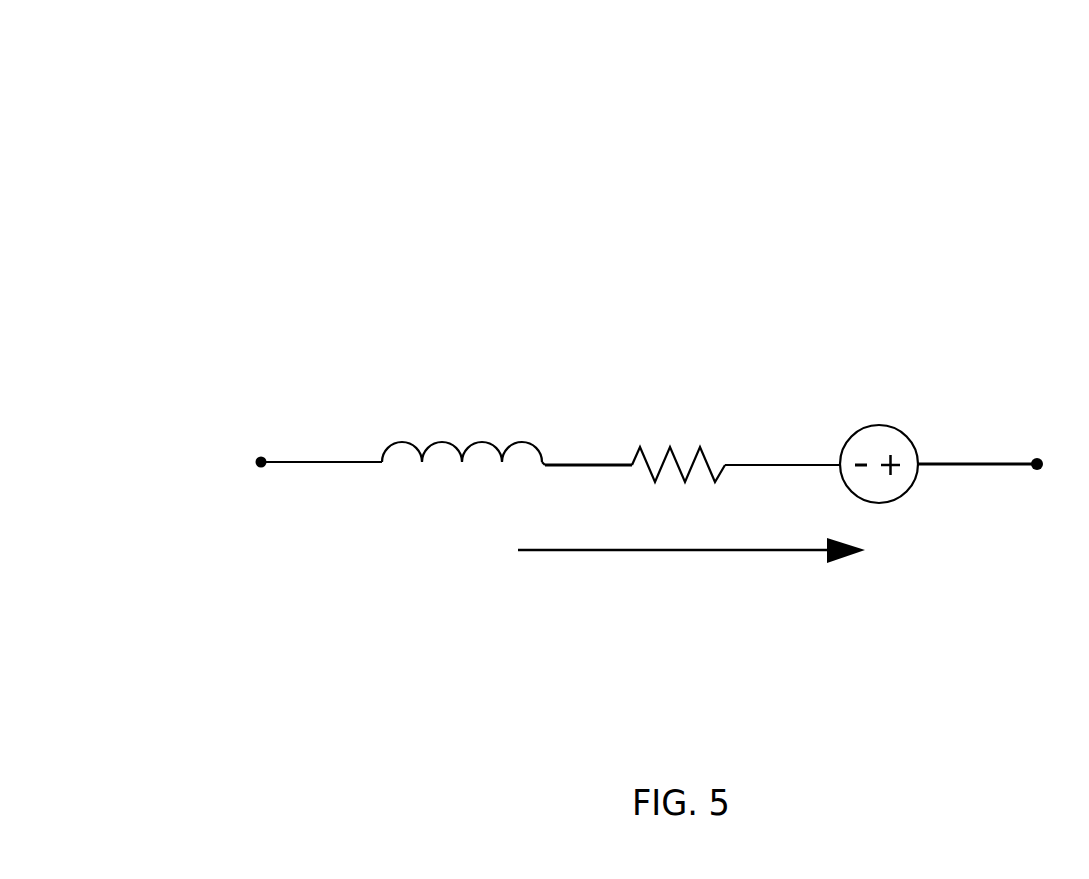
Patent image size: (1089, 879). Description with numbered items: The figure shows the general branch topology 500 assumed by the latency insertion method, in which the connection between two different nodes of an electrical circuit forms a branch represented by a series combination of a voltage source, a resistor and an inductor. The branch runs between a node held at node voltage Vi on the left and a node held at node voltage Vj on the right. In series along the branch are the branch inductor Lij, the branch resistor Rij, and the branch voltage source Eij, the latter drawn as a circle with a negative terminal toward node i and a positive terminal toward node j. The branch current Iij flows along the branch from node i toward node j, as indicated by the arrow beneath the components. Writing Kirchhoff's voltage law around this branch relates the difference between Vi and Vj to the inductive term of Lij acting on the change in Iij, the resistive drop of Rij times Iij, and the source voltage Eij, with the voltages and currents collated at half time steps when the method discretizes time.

The branch topology diagram 500 is at (86, 80).
The node voltage at node i Vi is at (308, 493).
The branch inductor Lij is at (507, 423).
The branch resistor Rij is at (736, 435).
The branch voltage source Eij is at (879, 430).
The node voltage at node j Vj is at (993, 494).
The branch current Iij is at (691, 576).